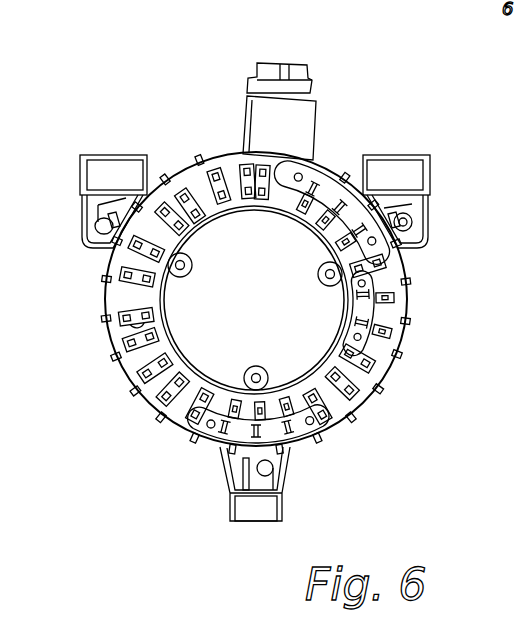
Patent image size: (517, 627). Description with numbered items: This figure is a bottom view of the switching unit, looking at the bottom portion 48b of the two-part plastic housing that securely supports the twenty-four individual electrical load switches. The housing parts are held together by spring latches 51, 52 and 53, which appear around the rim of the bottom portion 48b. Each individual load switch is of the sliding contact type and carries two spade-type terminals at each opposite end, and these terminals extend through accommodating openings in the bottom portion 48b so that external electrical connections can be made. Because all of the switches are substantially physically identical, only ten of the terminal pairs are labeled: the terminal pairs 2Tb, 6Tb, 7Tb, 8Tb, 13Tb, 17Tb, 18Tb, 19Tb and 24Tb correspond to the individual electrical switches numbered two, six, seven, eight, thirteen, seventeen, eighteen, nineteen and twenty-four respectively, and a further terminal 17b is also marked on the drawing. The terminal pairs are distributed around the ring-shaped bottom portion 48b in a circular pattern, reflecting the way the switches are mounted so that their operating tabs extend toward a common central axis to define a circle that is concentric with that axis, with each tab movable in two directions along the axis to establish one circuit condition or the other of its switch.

The bottom portion of the housing 48b is at (389, 311).
The terminal pair 17Tb is at (161, 206).
The terminal pair 18Tb is at (131, 246).
The terminal pair 19Tb is at (122, 275).
The terminal pair 7Tb is at (380, 332).
The terminal pair 6Tb is at (372, 370).
The terminal pair 2Tb is at (267, 393).
The terminal 17b is at (236, 411).
The terminal pair 13Tb is at (300, 158).
The terminal pair 8Tb is at (378, 284).
The terminal pair 24Tb is at (205, 424).
The spring latch 53 is at (97, 198).
The spring latch 52 is at (406, 222).
The spring latch 51 is at (280, 476).